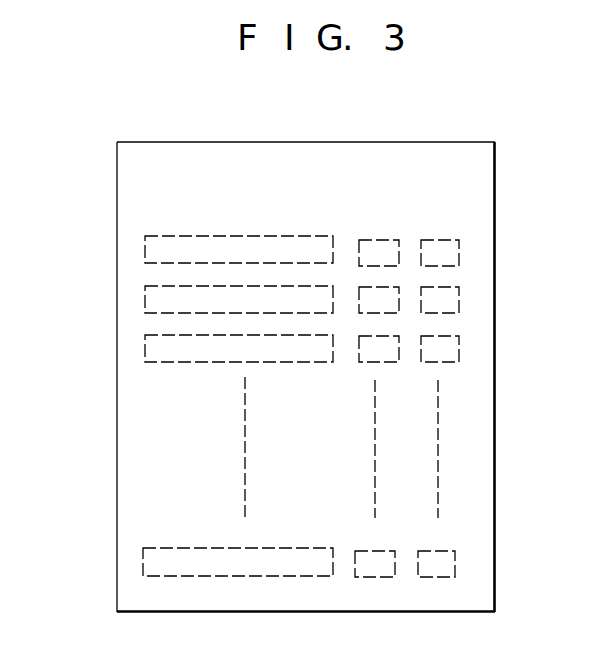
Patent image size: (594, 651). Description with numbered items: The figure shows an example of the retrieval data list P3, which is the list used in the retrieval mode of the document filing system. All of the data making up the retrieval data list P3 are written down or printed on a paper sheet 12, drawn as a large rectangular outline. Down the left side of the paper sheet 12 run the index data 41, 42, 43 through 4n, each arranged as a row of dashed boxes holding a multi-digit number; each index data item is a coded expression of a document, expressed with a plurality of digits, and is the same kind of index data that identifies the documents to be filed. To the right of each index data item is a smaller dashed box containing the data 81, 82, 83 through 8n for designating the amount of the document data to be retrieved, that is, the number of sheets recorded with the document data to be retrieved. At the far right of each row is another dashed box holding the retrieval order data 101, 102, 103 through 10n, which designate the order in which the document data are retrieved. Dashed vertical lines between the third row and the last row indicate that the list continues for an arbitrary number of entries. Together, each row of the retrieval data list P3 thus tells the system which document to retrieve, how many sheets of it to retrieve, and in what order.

The retrieval data list P3 is at (425, 135).
The paper sheet 12 is at (125, 190).
The index data 41 is at (146, 249).
The index data 42 is at (146, 299).
The index data 43 is at (146, 347).
The index data 4n is at (146, 559).
The data for designating the amount of document data 81 is at (396, 243).
The data for designating the amount of document data 82 is at (396, 293).
The data for designating the amount of document data 83 is at (396, 341).
The data for designating the amount of document data 8n is at (394, 557).
The retrieval order data 101 is at (458, 246).
The retrieval order data 102 is at (457, 309).
The retrieval order data 103 is at (457, 358).
The retrieval order data 10n is at (453, 569).